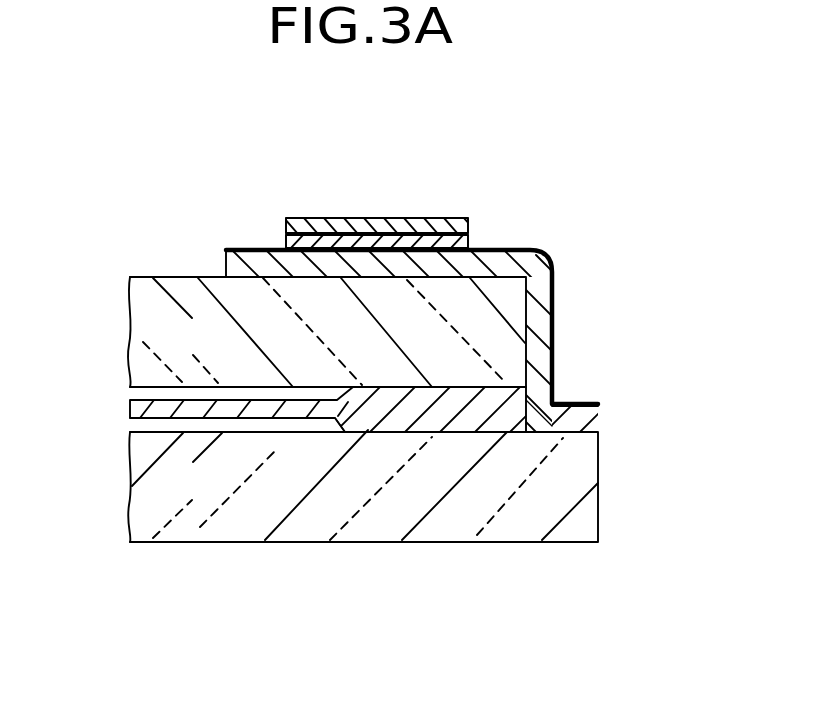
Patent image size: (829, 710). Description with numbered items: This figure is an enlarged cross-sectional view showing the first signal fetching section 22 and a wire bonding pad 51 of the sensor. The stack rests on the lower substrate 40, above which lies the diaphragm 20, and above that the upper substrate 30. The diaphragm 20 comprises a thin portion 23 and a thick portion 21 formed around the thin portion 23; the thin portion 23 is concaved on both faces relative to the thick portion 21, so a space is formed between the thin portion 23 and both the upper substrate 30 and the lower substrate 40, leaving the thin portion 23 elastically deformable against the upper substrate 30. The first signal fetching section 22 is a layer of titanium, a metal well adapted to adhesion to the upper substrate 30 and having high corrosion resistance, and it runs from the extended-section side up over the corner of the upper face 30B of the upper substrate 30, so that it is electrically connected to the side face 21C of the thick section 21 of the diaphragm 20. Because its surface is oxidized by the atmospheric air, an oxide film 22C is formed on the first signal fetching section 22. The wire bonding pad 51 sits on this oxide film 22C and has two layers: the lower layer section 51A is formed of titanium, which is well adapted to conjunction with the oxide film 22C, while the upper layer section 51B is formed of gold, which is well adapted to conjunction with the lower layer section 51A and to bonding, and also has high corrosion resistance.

The diaphragm 20 is at (131, 412).
The thick portion 21 is at (460, 414).
The side face of the thick section 21C is at (538, 389).
The first signal fetching section 22 is at (535, 312).
The oxide film 22C is at (556, 266).
The thin portion 23 is at (287, 437).
The upper substrate 30 is at (141, 335).
The upper face of the upper substrate 30B is at (192, 277).
The lower substrate 40 is at (131, 484).
The wire bonding pad 51 is at (559, 118).
The lower layer section 51A is at (453, 218).
The upper layer section 51B is at (422, 218).